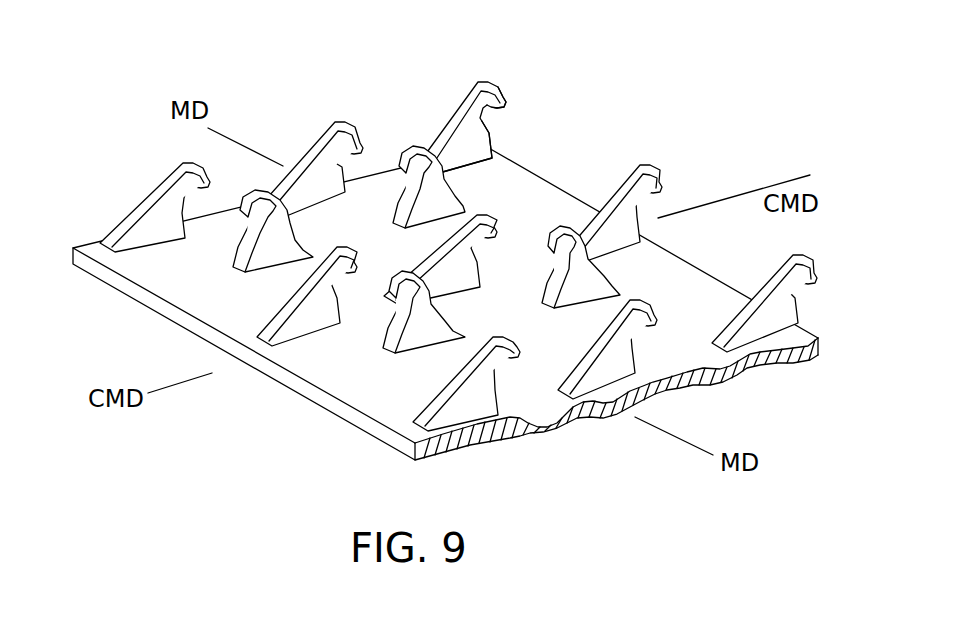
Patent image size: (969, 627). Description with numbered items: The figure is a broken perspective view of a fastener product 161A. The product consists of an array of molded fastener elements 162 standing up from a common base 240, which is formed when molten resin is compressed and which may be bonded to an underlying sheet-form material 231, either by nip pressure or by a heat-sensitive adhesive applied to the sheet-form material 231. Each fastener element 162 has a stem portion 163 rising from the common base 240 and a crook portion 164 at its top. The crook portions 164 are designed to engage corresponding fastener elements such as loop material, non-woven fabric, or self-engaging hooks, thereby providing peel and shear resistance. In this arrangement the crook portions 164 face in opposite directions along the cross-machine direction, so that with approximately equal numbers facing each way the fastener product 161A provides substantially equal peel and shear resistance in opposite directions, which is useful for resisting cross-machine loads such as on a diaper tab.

The fastener product 161A is at (682, 149).
The fastener elements 162 is at (336, 118).
The stem portions 163 is at (472, 137).
The crook portions 164 is at (508, 98).
The common base 240 is at (305, 362).
The sheet-form material 231 is at (330, 415).